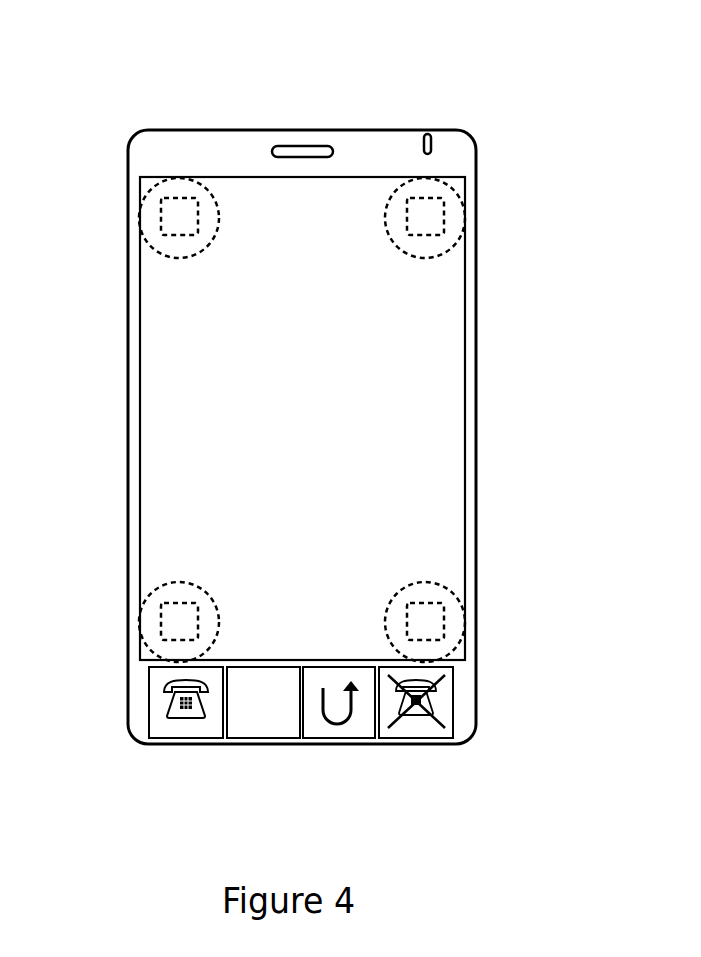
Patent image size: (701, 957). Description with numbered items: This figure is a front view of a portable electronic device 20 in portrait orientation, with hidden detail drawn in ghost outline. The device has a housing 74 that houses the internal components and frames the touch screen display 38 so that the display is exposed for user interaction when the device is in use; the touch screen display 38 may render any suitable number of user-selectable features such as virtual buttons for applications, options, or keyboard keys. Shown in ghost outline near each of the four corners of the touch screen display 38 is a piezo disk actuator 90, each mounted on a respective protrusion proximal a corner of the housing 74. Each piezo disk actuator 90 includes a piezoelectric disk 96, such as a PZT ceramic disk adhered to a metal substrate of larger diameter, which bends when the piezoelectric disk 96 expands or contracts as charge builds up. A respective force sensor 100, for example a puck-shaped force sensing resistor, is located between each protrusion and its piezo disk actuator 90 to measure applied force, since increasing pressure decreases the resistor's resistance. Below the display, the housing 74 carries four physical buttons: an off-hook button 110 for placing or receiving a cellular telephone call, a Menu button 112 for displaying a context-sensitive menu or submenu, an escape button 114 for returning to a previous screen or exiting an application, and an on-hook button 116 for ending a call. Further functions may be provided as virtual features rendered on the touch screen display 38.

The portable electronic device 20 is at (527, 74).
The housing 74 is at (472, 353).
The touch screen display 38 is at (435, 550).
The piezoelectric disk 96 is at (152, 250).
The piezo disk actuator 90 is at (150, 648).
The force sensor 100 is at (161, 216).
The off-hook button 110 is at (182, 725).
The Menu button 112 is at (267, 723).
The escape button 114 is at (340, 728).
The on-hook button 116 is at (417, 727).